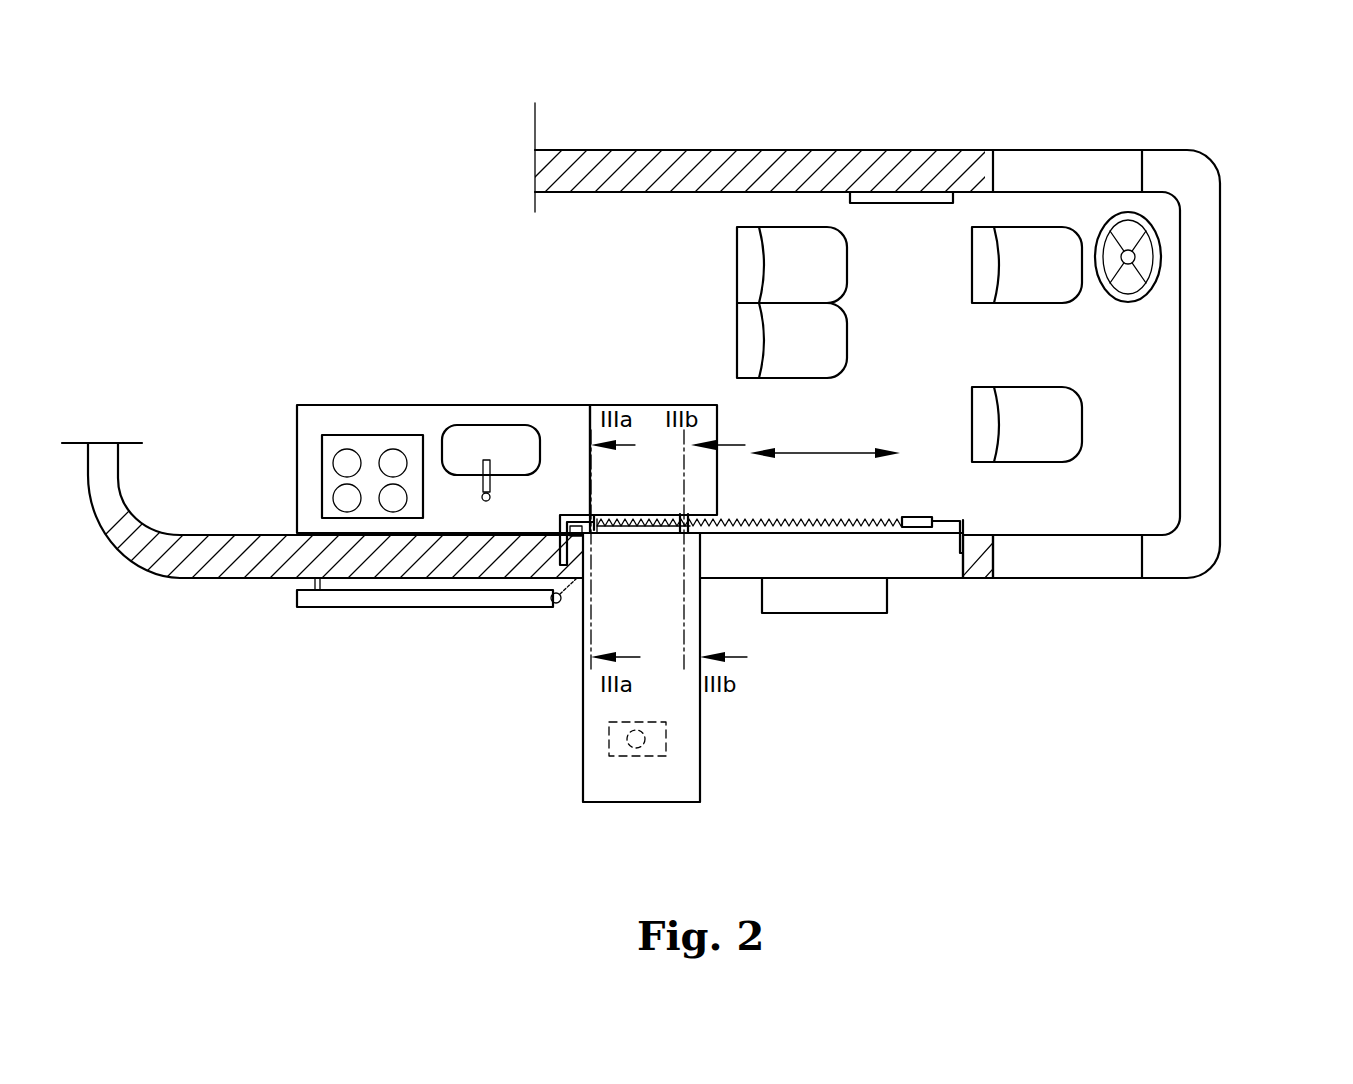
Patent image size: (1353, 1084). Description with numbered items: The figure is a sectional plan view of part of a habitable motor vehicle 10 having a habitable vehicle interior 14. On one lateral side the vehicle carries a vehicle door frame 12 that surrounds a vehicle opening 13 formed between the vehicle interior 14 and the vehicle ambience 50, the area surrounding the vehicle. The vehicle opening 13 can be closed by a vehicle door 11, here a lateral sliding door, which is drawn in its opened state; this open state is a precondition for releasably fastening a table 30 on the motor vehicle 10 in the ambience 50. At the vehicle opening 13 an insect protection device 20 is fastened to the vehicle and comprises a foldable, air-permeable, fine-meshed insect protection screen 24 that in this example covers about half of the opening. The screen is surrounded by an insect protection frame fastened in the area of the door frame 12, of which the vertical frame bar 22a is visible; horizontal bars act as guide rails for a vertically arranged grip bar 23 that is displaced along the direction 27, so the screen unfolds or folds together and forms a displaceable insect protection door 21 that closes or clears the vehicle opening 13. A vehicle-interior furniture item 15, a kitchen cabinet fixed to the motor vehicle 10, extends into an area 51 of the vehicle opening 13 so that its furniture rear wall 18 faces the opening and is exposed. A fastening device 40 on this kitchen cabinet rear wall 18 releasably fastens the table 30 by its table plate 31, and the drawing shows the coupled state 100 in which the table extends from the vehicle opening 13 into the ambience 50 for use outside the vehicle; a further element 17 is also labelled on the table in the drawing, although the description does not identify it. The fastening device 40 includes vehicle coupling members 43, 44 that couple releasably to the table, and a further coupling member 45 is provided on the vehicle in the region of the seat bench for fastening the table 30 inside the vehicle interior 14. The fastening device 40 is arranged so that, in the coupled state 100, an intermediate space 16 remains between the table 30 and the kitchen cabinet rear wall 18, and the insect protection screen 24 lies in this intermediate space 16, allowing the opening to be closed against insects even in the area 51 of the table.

The motor vehicle 10 is at (1185, 180).
The vehicle door 11 is at (340, 600).
The vehicle door frame 12 is at (938, 555).
The vehicle opening 13 is at (904, 578).
The vehicle interior 14 is at (1000, 346).
The vehicle-interior furniture item 15 is at (598, 405).
The intermediate space 16 is at (728, 548).
The hidden element 17 is at (648, 775).
The furniture rear wall 18 is at (624, 554).
The insect protection device 20 is at (845, 555).
The insect protection door 21 is at (760, 517).
The frame bar 22a is at (566, 520).
The grip bar 23 is at (917, 516).
The insect protection screen 24 is at (800, 527).
The direction 27 is at (835, 452).
The table 30 is at (532, 721).
The table plate 31 is at (600, 780).
The fastening device 40 is at (602, 574).
The vehicle coupling member 43 is at (586, 514).
The vehicle coupling member 44 is at (708, 517).
The coupling member 45 is at (885, 230).
The vehicle ambience 50 is at (312, 708).
The area of vehicle opening 51 is at (641, 590).
The coupled state 100 is at (1177, 698).